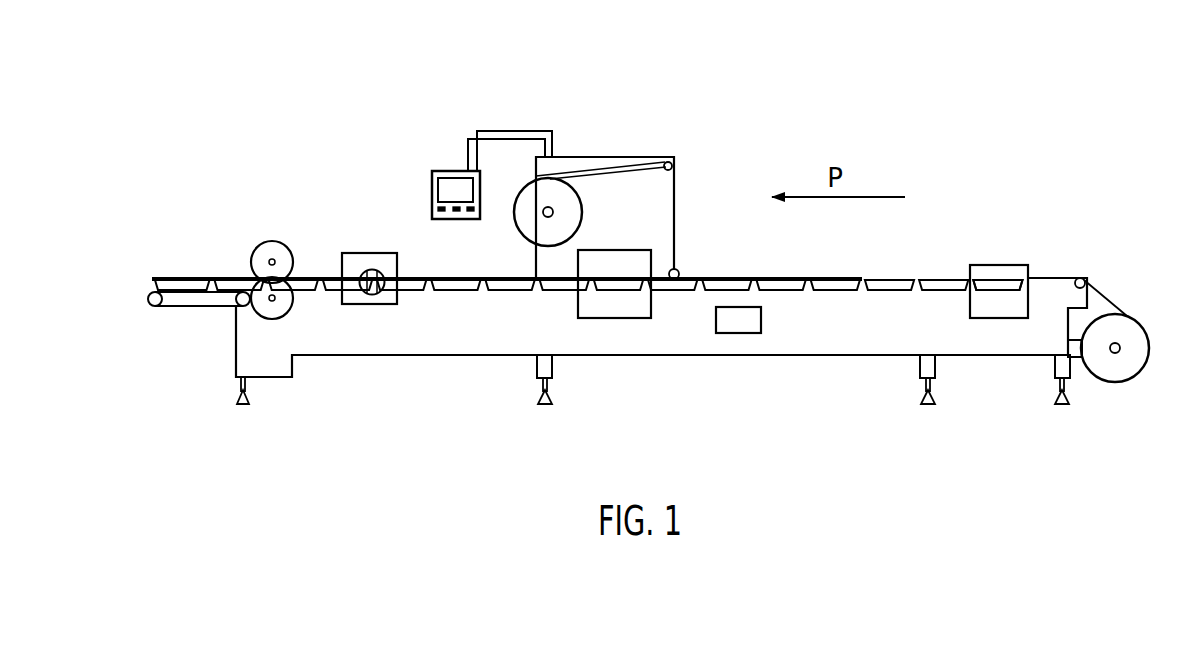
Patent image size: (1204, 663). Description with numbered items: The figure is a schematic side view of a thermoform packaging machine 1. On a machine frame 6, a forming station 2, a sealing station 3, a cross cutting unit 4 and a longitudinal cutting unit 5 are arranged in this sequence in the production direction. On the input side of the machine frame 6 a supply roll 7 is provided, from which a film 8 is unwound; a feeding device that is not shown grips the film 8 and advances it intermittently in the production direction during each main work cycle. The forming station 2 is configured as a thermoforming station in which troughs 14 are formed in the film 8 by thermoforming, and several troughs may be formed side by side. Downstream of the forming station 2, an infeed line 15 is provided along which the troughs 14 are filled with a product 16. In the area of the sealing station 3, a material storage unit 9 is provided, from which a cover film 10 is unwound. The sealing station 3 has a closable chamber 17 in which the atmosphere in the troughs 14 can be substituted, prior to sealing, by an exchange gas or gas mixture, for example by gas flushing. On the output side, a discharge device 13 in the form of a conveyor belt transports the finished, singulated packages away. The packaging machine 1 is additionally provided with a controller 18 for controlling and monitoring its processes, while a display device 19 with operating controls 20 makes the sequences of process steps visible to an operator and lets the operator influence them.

The thermoform packaging machine 1 is at (906, 72).
The forming station 2 is at (1003, 268).
The sealing station 3 is at (600, 263).
The cross cutting unit 4 is at (357, 256).
The longitudinal cutting unit 5 is at (272, 236).
The machine frame 6 is at (523, 377).
The supply roll 7 is at (1150, 347).
The film 8 is at (1111, 297).
The material storage unit 9 is at (530, 230).
The cover film 10 is at (640, 165).
The discharge device 13 is at (188, 306).
The troughs 14 is at (993, 292).
The infeed line 15 is at (886, 306).
The product 16 is at (852, 284).
The closable chamber 17 is at (612, 316).
The controller 18 is at (738, 326).
The display device 19 is at (452, 171).
The operating controls 20 is at (437, 209).